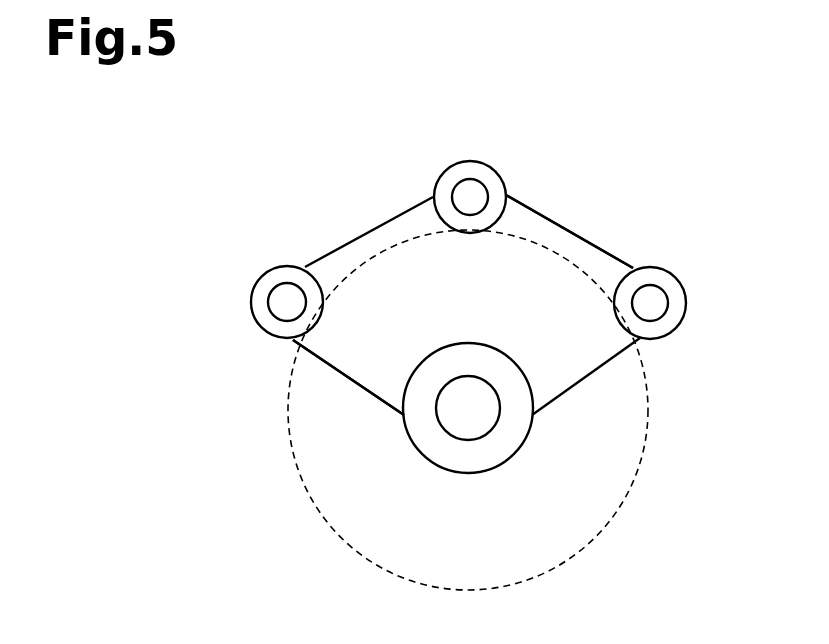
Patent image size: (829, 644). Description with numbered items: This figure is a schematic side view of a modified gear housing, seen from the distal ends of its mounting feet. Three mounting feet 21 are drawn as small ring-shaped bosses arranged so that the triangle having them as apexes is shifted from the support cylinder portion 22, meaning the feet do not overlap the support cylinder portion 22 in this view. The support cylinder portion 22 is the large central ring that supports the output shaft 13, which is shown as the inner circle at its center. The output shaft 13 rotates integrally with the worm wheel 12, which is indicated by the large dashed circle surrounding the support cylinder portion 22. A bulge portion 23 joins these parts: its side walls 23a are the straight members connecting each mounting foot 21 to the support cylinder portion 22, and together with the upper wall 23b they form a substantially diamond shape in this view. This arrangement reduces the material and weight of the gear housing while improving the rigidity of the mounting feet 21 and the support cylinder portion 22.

The worm wheel 12 is at (648, 410).
The output shaft 13 is at (468, 436).
The mounting feet 21 is at (469, 161).
The support cylinder portion 22 is at (468, 344).
The bulge portion 23 is at (347, 368).
The side walls 23a is at (358, 233).
The upper wall 23b is at (607, 233).